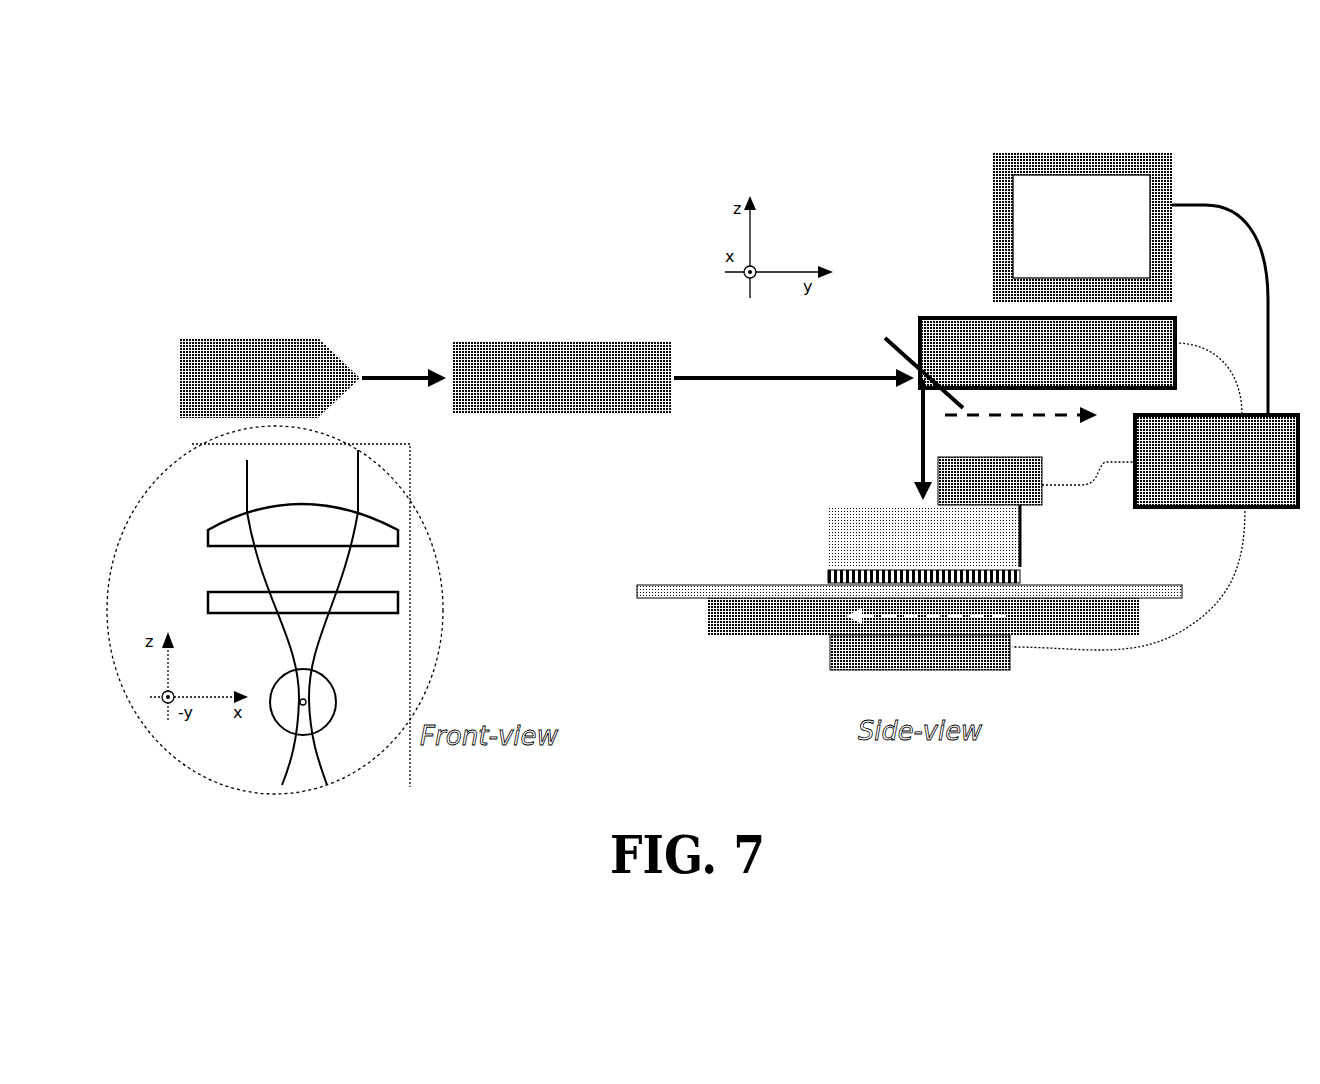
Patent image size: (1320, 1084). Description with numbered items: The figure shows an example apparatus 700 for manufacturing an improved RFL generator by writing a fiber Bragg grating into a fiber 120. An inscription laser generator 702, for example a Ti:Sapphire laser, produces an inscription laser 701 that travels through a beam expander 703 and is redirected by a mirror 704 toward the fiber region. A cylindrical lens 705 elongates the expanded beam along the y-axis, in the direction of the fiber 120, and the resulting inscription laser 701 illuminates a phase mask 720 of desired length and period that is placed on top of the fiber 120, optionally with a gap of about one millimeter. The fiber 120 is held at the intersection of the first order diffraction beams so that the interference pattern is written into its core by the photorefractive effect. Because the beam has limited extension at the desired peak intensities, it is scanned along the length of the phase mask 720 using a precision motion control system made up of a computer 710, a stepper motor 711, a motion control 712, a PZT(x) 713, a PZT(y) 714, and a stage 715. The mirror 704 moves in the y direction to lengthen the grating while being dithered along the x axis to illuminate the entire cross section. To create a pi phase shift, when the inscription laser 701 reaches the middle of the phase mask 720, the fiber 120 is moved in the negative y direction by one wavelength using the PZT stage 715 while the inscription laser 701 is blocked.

The apparatus 700 is at (335, 168).
The inscription laser generator 702 is at (268, 352).
The inscription laser 701 is at (388, 378).
The beam expander 703 is at (562, 363).
The mirror 704 is at (900, 362).
The stepper motor 711 is at (1047, 341).
The computer 710 is at (1130, 284).
The motion control 712 is at (1155, 496).
The PZT(x) 713 is at (990, 469).
The cylindrical lens 705 is at (392, 509).
The phase mask 720 is at (418, 582).
The fiber 120 is at (355, 680).
The stage 715 is at (924, 628).
The PZT(y) 714 is at (920, 665).